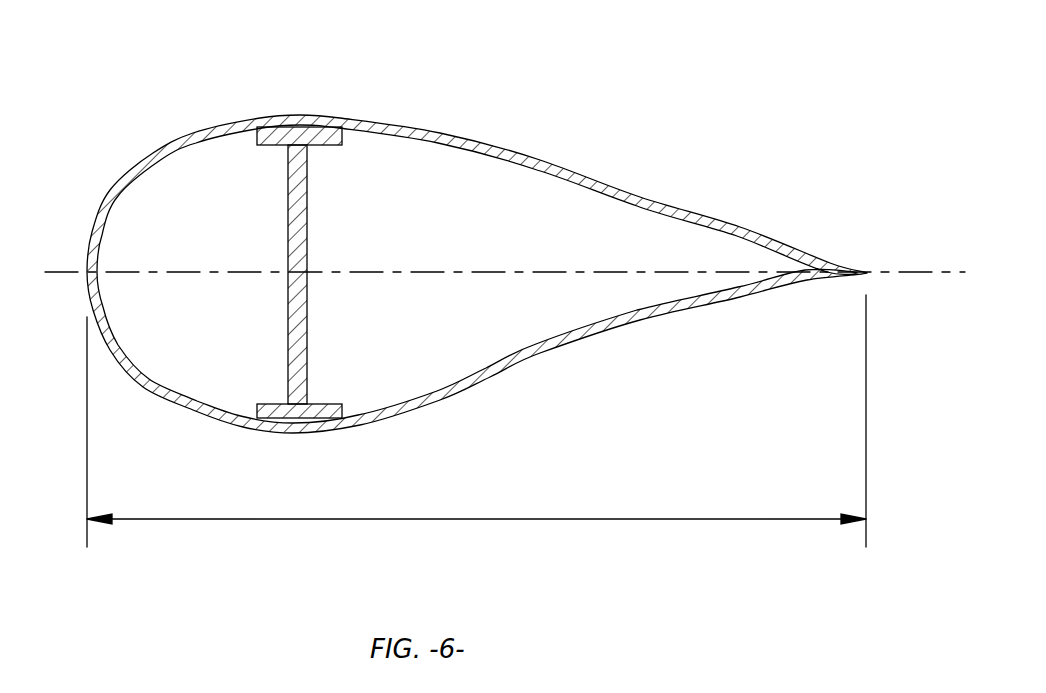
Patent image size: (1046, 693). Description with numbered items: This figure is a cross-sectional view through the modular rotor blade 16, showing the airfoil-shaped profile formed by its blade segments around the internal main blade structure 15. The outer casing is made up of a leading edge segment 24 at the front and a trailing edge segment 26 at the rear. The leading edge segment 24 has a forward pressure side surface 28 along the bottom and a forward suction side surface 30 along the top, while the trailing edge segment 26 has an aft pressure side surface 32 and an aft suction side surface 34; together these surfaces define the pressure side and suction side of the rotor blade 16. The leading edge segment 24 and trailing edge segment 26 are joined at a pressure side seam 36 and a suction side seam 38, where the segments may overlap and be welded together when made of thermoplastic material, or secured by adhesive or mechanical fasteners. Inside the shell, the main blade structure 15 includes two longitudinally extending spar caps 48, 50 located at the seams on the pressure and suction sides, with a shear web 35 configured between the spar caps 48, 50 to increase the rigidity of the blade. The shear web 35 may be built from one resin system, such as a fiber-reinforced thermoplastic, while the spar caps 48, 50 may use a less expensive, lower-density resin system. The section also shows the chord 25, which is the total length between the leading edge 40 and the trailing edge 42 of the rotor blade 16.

The modular rotor blade 16 is at (738, 78).
The leading edge segment 24 is at (113, 190).
The chord 25 is at (608, 520).
The trailing edge segment 26 is at (690, 207).
The forward pressure side surface 28 is at (177, 400).
The forward suction side surface 30 is at (173, 148).
The aft pressure side surface 32 is at (547, 360).
The aft suction side surface 34 is at (540, 160).
The shear web 35 is at (288, 240).
The pressure side seam 36 is at (287, 433).
The suction side seam 38 is at (317, 121).
The leading edge 40 is at (83, 270).
The trailing edge 42 is at (870, 273).
The spar cap 48 is at (320, 403).
The spar cap 50 is at (313, 147).
The main blade structure 15 is at (287, 363).